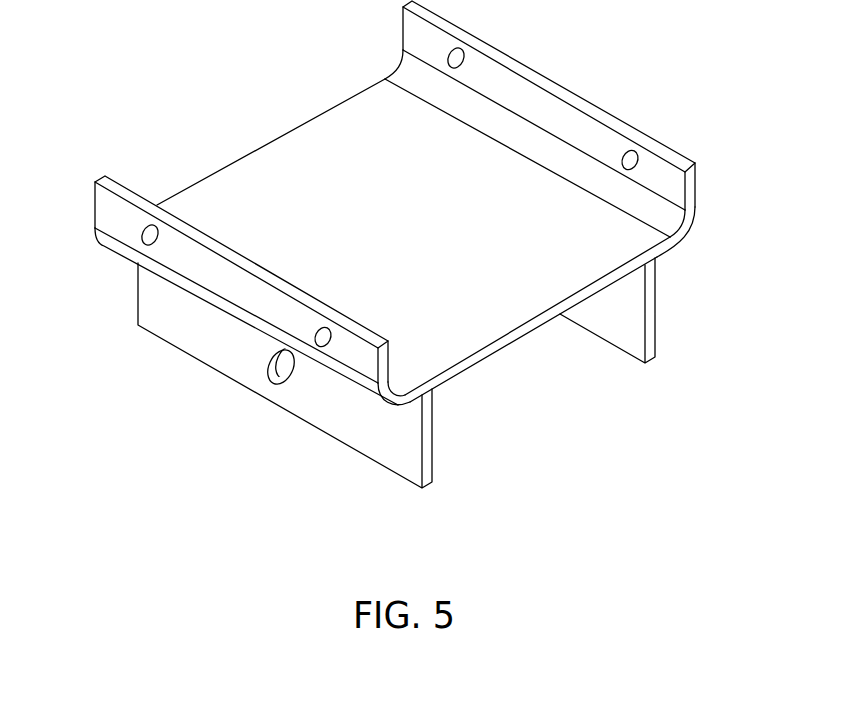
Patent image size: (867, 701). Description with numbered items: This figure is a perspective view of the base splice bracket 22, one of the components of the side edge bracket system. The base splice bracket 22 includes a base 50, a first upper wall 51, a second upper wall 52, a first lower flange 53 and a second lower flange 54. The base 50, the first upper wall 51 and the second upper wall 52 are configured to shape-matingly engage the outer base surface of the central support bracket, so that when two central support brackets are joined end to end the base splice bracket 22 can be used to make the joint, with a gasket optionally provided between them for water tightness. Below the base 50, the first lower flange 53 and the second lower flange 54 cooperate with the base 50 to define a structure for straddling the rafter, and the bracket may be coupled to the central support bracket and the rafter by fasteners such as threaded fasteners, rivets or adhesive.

The base splice bracket 22 is at (111, 321).
The base 50 is at (317, 153).
The first upper wall 51 is at (78, 201).
The second upper wall 52 is at (572, 66).
The first lower flange 53 is at (372, 459).
The second lower flange 54 is at (678, 307).